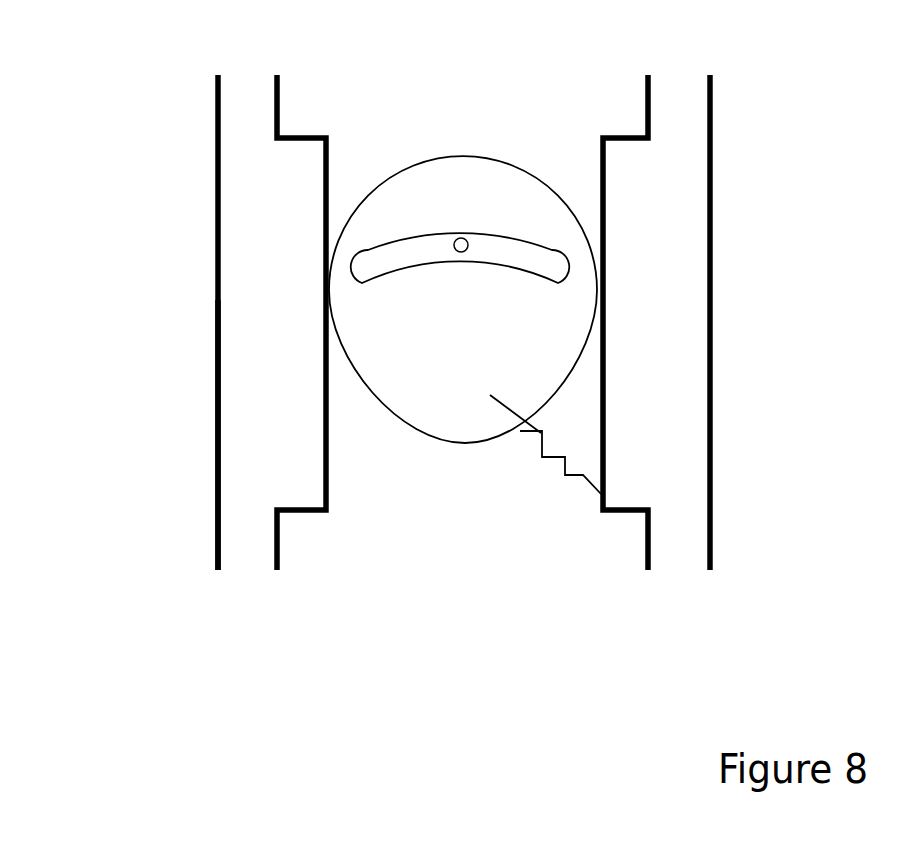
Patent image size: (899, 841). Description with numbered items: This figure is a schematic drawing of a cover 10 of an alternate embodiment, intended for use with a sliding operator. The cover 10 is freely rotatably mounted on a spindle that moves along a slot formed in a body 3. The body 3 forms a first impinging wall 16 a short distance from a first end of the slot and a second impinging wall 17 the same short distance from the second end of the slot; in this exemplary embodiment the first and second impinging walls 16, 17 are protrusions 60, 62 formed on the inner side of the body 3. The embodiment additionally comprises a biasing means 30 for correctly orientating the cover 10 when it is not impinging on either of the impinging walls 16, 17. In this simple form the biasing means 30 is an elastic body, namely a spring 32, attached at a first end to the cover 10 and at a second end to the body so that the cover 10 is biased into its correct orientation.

The body 3 is at (245, 208).
The cover 10 is at (459, 180).
The first impinging wall 16 is at (323, 210).
The second impinging wall 17 is at (603, 180).
The biasing means 30 is at (533, 502).
The spring 32 is at (540, 445).
The protrusion 60 is at (245, 447).
The protrusion 62 is at (662, 367).